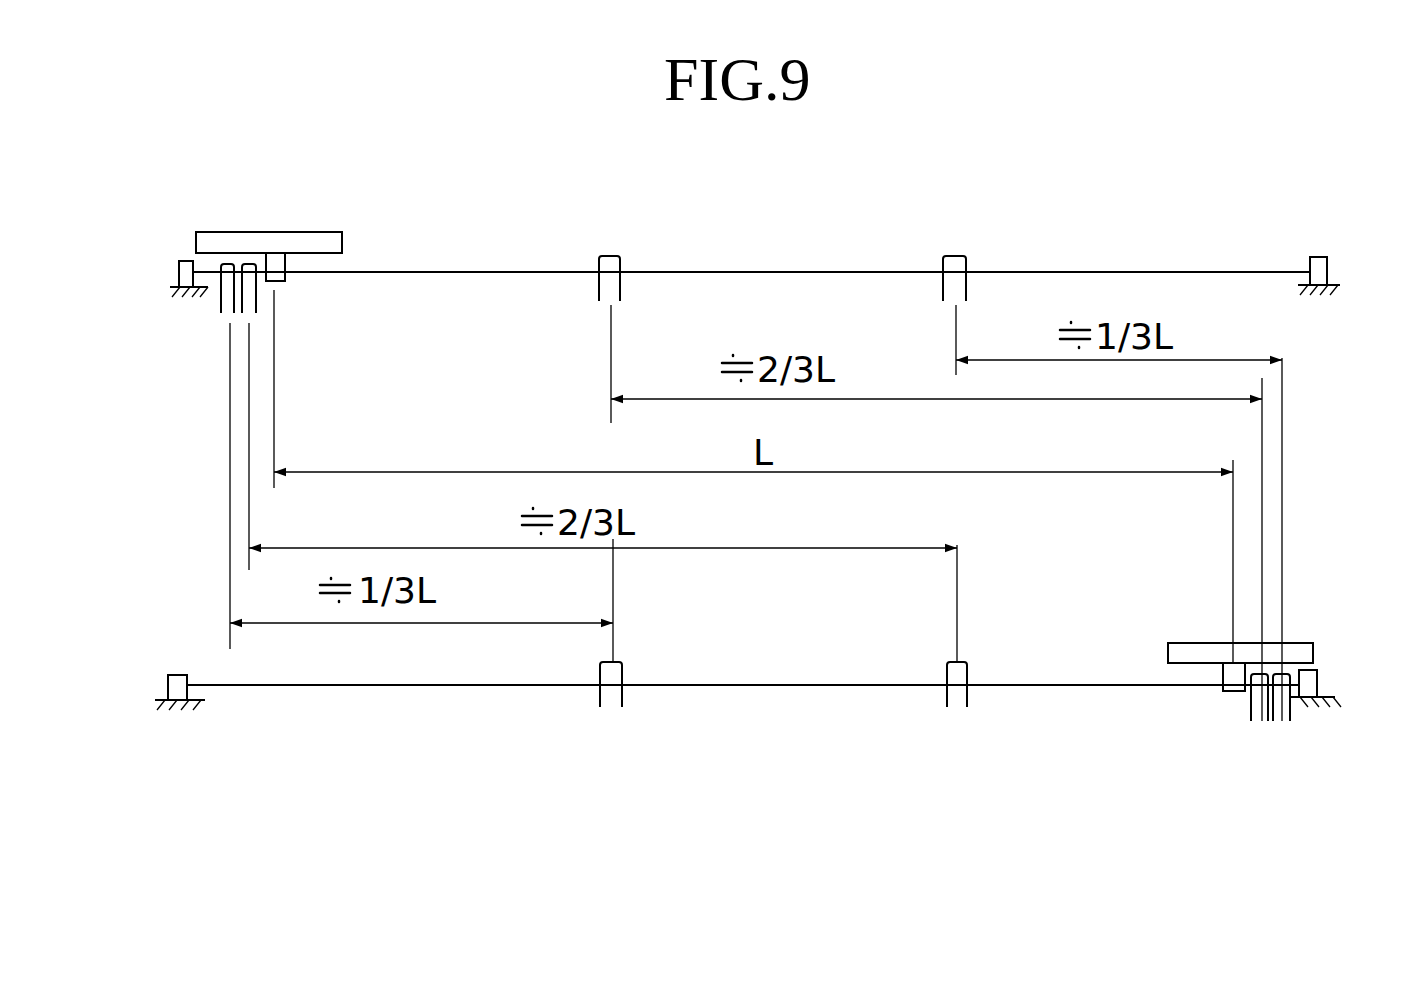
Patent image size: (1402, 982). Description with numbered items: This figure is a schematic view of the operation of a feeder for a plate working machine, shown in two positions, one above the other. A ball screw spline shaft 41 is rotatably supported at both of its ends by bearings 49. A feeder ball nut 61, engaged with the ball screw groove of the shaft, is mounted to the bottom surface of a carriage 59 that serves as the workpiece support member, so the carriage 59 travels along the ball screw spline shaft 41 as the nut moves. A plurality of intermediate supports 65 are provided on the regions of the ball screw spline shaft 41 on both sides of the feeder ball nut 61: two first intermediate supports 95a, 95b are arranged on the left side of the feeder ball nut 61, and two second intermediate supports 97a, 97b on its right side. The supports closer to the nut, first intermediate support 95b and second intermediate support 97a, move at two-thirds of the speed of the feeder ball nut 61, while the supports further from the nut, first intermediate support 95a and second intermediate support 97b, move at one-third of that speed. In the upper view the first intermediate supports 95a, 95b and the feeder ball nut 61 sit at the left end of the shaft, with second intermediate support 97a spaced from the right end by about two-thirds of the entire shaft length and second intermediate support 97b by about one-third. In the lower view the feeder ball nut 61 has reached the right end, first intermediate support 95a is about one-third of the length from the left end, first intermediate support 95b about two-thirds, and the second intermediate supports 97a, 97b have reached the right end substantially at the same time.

The ball screw spline shaft 41 is at (1175, 271).
The bearings 49 is at (188, 276).
The carriage 59 is at (315, 240).
The feeder ball nut 61 is at (285, 268).
The intermediate supports 65 is at (689, 508).
The first intermediate support 95a is at (223, 298).
The first intermediate support 95b is at (248, 297).
The second intermediate support 97a is at (613, 258).
The second intermediate support 97b is at (957, 258).